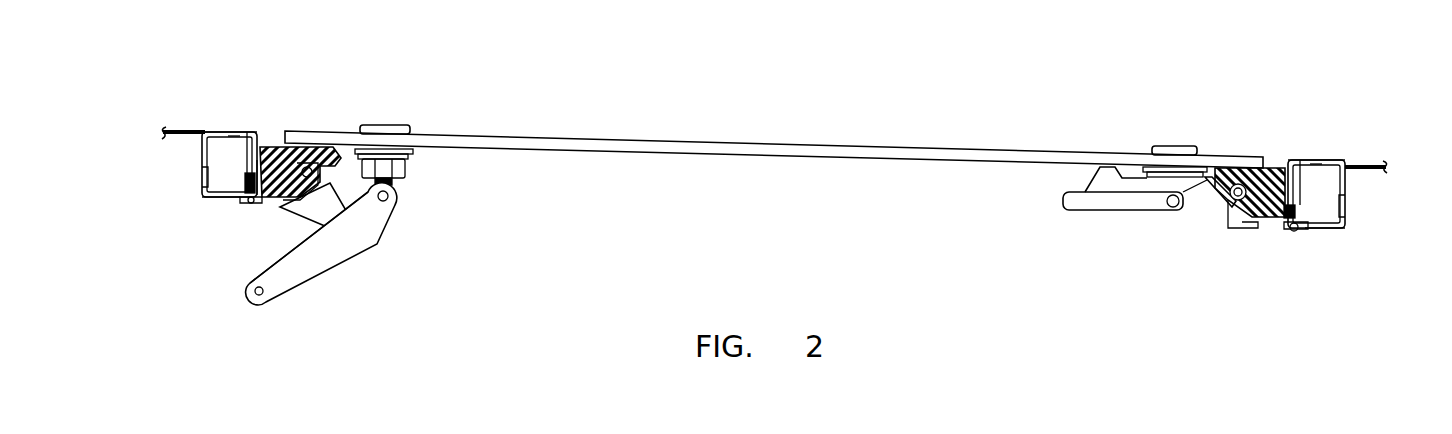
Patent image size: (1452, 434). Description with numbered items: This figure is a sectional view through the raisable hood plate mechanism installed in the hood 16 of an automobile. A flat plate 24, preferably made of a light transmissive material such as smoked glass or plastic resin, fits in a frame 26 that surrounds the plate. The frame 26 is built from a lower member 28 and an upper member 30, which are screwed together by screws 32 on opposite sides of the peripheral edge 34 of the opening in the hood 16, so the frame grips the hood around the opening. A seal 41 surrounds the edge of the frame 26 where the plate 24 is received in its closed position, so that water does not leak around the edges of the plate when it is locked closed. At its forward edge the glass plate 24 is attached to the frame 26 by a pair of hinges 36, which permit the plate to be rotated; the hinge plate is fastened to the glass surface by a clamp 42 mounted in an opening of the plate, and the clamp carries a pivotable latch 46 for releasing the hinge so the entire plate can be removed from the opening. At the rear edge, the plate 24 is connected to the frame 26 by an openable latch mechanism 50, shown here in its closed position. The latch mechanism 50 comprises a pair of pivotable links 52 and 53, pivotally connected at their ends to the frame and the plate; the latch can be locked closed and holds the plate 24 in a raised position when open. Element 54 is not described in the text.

The hood 16 is at (1363, 161).
The flat plate 24 is at (603, 140).
The frame 26 is at (190, 184).
The lower member 28 is at (213, 200).
The upper member 30 is at (247, 132).
The screws 32 is at (250, 204).
The peripheral edge 34 is at (233, 138).
The hinges 36 is at (1193, 237).
The seal 41 is at (268, 158).
The clamp 42 is at (1178, 149).
The pivotable latch 46 is at (1082, 204).
The latch mechanism 50 is at (303, 264).
The pivotable link 52 is at (377, 232).
The pivotable link 53 is at (298, 243).
The pivot pin 54 is at (260, 302).